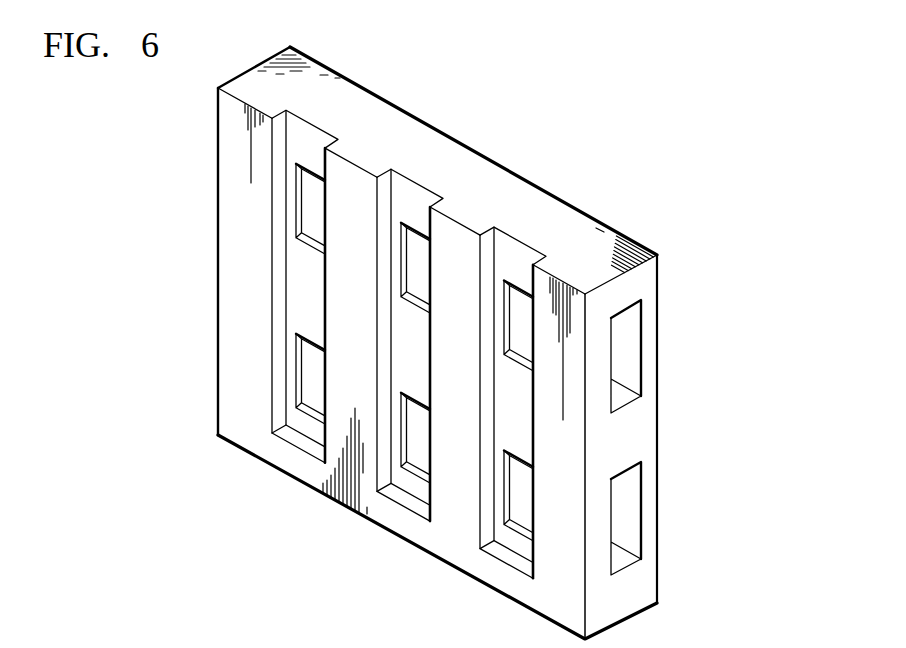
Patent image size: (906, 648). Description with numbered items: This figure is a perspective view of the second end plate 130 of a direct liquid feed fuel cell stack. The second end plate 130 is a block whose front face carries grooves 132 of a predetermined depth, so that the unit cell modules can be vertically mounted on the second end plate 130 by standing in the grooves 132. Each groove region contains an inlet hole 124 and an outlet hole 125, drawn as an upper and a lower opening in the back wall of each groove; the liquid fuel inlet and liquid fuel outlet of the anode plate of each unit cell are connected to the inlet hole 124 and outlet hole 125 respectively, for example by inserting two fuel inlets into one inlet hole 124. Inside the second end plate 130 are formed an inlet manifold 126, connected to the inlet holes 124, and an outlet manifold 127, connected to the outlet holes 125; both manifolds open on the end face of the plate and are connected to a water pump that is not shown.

The second end plate 130 is at (478, 158).
The grooves 132 is at (310, 156).
The inlet hole 124 is at (313, 205).
The outlet hole 125 is at (316, 378).
The inlet manifold 126 is at (622, 343).
The outlet manifold 127 is at (621, 504).